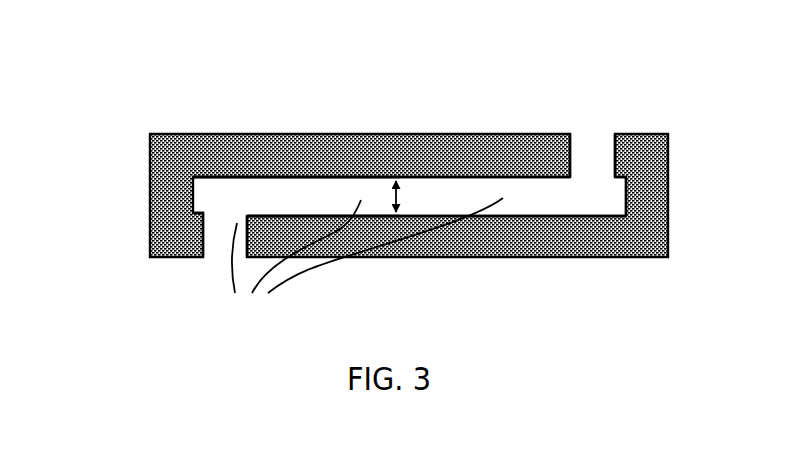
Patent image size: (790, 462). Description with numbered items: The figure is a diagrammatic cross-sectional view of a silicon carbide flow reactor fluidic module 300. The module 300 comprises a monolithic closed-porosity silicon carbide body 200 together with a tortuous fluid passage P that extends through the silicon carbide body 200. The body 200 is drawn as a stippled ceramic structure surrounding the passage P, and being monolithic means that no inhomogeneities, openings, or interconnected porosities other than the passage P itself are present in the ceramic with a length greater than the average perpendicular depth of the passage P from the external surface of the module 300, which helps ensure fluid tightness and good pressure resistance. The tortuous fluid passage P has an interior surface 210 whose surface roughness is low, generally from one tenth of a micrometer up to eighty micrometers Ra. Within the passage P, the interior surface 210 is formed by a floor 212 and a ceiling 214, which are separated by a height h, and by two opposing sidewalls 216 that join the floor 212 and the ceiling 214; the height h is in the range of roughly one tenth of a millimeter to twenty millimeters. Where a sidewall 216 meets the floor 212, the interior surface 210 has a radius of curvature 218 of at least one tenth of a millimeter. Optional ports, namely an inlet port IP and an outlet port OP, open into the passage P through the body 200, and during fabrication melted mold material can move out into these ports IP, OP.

The monolithic closed-porosity silicon carbide body 200 is at (170, 185).
The interior surface 210 is at (477, 184).
The floor 212 is at (265, 214).
The ceiling 214 is at (335, 178).
The sidewalls 216 is at (195, 203).
The radius of curvature 218 is at (623, 214).
The silicon carbide flow reactor fluidic module 300 is at (360, 241).
The height h is at (399, 194).
The tortuous fluid passage P is at (367, 261).
The outlet port OP is at (212, 279).
The inlet port IP is at (602, 90).